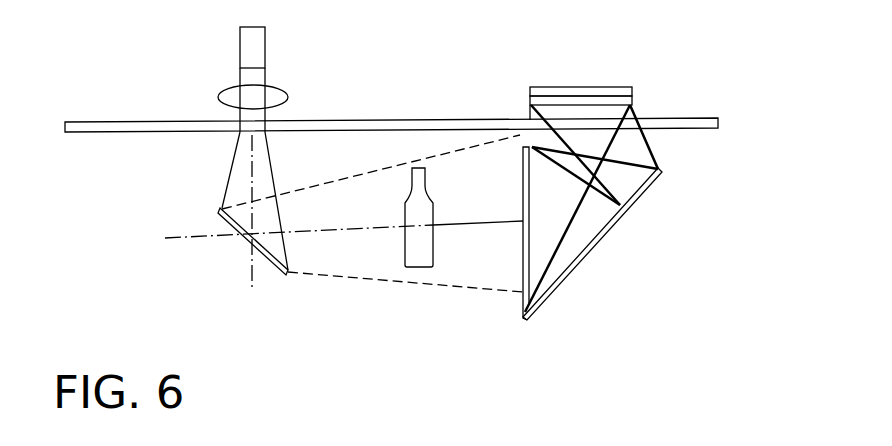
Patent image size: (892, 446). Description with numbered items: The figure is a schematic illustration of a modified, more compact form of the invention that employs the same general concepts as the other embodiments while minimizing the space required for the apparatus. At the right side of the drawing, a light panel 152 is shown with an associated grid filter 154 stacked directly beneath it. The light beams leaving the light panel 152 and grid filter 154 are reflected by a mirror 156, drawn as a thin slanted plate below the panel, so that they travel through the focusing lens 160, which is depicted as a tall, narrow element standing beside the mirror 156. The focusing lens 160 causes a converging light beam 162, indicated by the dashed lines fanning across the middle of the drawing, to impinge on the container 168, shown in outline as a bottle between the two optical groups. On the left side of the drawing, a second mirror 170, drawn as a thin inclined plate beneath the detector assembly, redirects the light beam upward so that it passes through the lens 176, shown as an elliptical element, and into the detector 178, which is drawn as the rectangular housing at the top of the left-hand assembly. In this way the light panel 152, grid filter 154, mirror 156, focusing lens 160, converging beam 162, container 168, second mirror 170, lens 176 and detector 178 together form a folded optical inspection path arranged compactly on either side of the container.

The light panel 152 is at (613, 90).
The grid filter 154 is at (622, 100).
The mirror 156 is at (600, 238).
The focusing lens 160 is at (523, 190).
The converging light beam 162 is at (415, 161).
The container 168 is at (398, 201).
The second mirror 170 is at (250, 238).
The lens 176 is at (220, 98).
The detector 178 is at (242, 50).